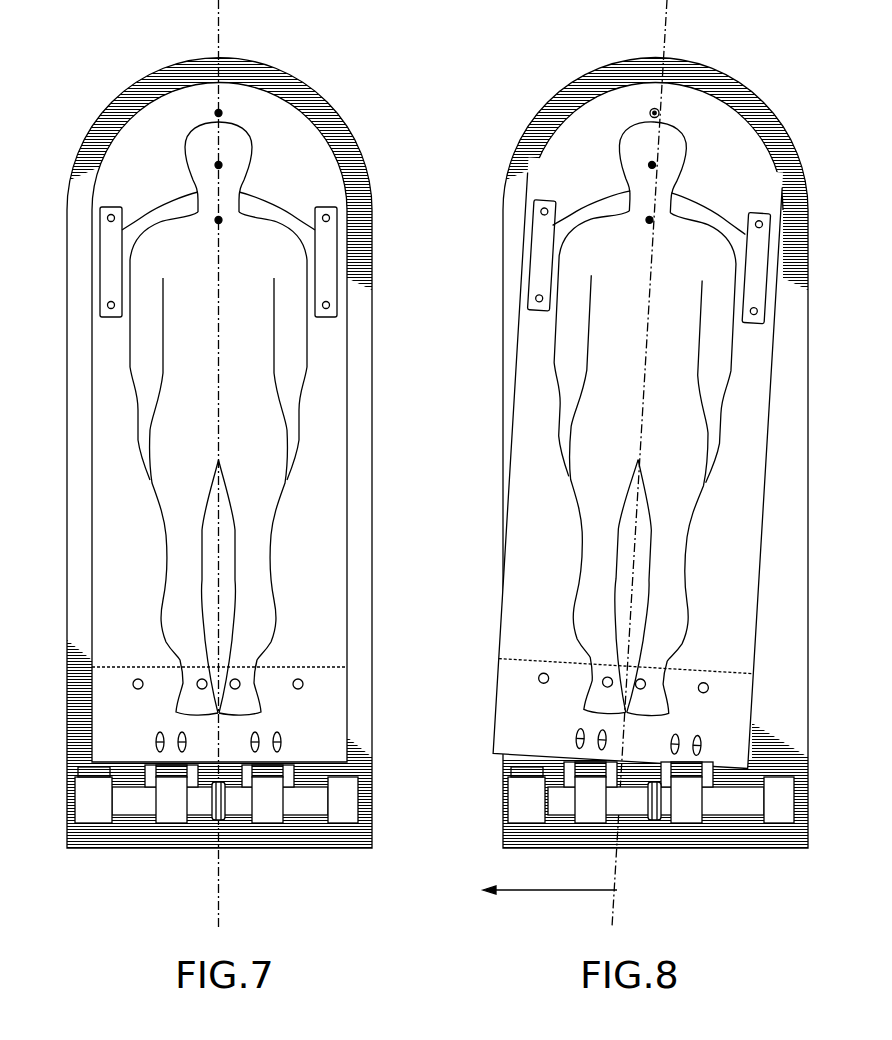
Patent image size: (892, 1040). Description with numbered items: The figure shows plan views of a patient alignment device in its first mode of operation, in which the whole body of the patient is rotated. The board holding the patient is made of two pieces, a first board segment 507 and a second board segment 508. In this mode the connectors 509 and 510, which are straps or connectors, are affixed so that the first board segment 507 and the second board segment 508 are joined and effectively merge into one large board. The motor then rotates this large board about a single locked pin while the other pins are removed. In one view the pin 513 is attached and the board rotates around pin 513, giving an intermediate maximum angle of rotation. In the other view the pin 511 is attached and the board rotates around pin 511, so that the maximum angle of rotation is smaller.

In FIG. 7, the first board segment 507 is at (317, 553).
In FIG. 8, the first board segment 507 is at (542, 615).
In FIG. 7, the second board segment 508 is at (140, 121).
In FIG. 8, the second board segment 508 is at (722, 117).
In FIG. 7, the connector 509 is at (110, 247).
In FIG. 8, the connector 509 is at (543, 247).
In FIG. 7, the connector 510 is at (323, 253).
In FIG. 8, the connector 510 is at (760, 267).
In FIG. 8, the pin 511 is at (654, 113).
In FIG. 7, the pin 513 is at (222, 165).